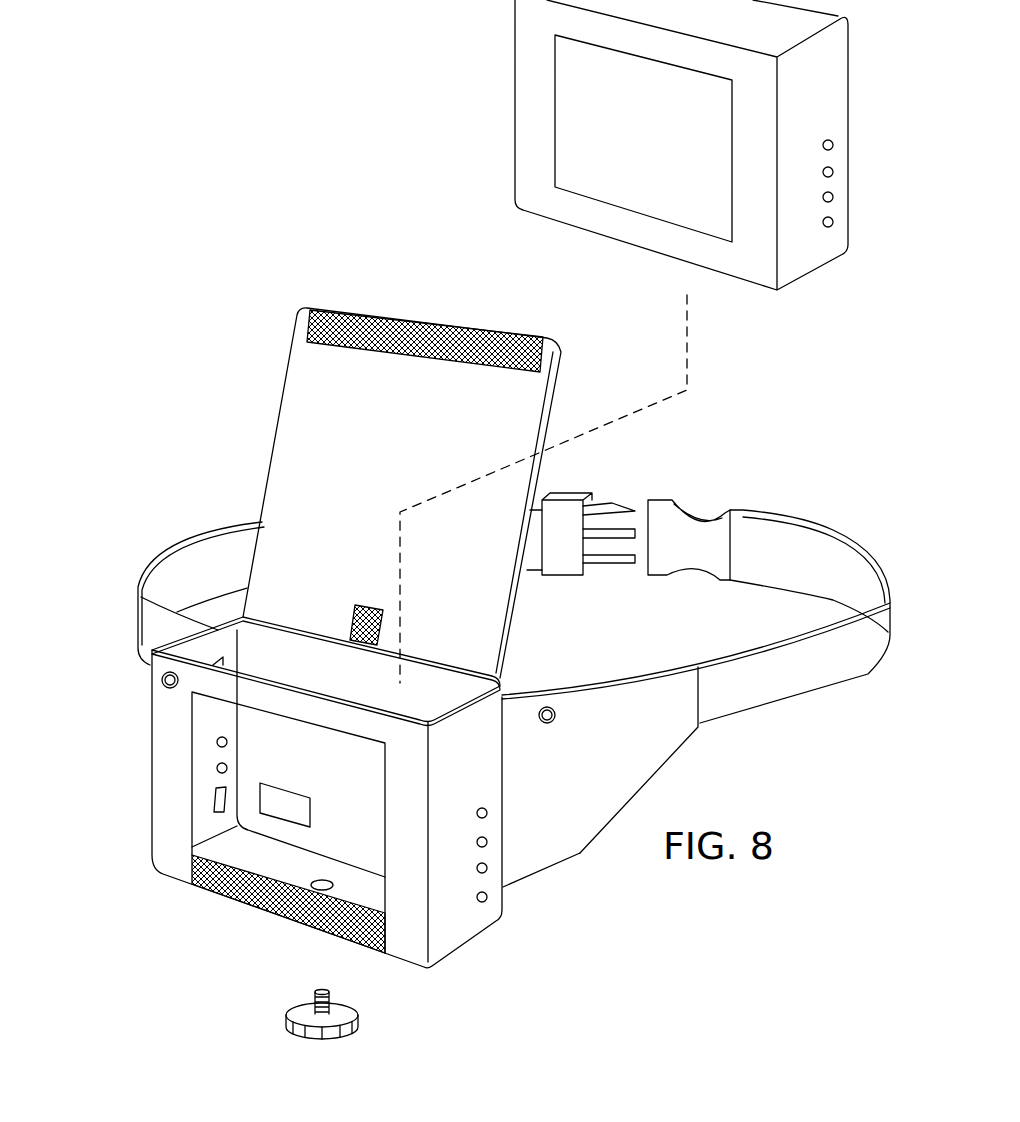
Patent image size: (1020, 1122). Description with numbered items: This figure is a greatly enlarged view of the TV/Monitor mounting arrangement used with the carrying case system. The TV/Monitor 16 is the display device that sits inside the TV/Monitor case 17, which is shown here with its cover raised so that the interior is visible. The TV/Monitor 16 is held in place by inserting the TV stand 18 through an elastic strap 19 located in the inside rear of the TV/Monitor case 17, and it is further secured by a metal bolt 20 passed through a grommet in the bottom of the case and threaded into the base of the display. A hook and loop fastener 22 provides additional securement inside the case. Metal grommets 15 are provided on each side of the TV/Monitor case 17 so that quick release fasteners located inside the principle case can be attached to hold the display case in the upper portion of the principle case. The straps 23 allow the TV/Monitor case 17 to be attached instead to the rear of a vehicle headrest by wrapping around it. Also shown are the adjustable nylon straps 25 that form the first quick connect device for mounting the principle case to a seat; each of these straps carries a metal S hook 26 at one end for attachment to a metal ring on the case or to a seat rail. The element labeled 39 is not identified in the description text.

The metal grommets 15 is at (558, 693).
The TV/Monitor 16 is at (532, 97).
The TV/Monitor case 17 is at (358, 1017).
The TV stand 18 is at (290, 875).
The elastic strap 19 is at (302, 448).
The metal bolt 20 is at (386, 308).
The hook and loop fastener 22 is at (250, 775).
The straps 23 is at (163, 677).
The adjustable nylon straps 25 is at (775, 700).
The metal S hook 26 is at (673, 500).
The seam 39 is at (505, 887).